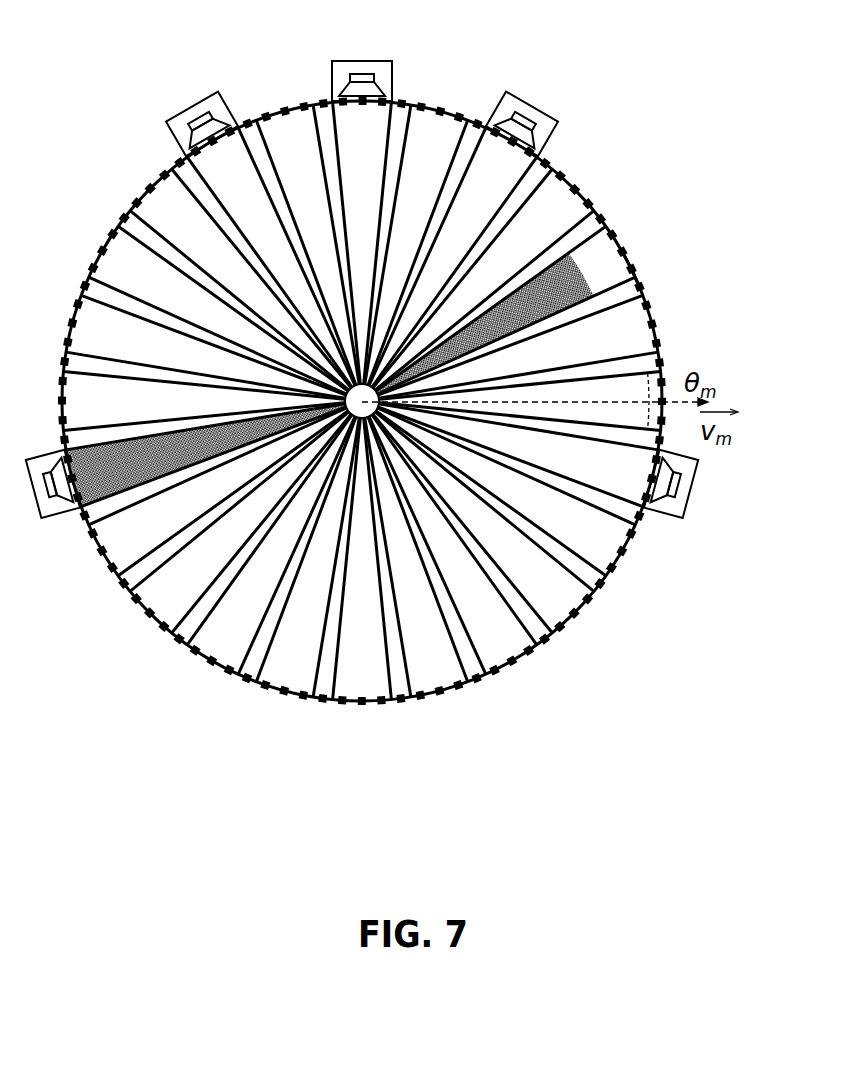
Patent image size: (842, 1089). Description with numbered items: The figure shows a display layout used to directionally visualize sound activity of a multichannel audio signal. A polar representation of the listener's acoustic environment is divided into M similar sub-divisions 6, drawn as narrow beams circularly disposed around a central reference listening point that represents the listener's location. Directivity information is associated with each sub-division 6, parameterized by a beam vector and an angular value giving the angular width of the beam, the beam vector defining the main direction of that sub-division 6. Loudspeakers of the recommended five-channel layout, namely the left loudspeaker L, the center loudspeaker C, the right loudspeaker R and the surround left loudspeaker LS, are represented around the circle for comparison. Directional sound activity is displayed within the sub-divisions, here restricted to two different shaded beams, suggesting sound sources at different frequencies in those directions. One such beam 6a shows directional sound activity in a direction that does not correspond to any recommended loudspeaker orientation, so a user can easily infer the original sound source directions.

The sub-division 6 is at (577, 192).
The beam 6a is at (630, 258).
The center loudspeaker C is at (360, 62).
The left loudspeaker L is at (192, 108).
The right loudspeaker R is at (552, 112).
The surround left loudspeaker LS is at (62, 520).